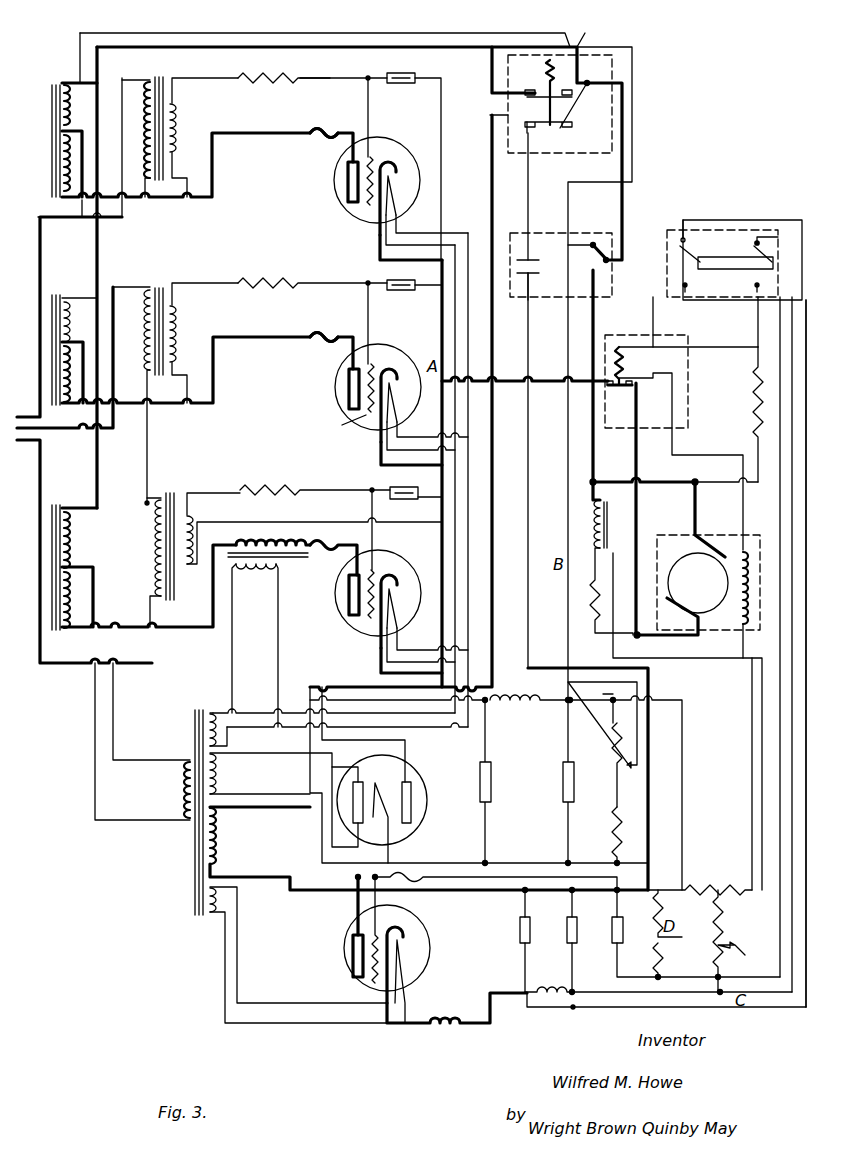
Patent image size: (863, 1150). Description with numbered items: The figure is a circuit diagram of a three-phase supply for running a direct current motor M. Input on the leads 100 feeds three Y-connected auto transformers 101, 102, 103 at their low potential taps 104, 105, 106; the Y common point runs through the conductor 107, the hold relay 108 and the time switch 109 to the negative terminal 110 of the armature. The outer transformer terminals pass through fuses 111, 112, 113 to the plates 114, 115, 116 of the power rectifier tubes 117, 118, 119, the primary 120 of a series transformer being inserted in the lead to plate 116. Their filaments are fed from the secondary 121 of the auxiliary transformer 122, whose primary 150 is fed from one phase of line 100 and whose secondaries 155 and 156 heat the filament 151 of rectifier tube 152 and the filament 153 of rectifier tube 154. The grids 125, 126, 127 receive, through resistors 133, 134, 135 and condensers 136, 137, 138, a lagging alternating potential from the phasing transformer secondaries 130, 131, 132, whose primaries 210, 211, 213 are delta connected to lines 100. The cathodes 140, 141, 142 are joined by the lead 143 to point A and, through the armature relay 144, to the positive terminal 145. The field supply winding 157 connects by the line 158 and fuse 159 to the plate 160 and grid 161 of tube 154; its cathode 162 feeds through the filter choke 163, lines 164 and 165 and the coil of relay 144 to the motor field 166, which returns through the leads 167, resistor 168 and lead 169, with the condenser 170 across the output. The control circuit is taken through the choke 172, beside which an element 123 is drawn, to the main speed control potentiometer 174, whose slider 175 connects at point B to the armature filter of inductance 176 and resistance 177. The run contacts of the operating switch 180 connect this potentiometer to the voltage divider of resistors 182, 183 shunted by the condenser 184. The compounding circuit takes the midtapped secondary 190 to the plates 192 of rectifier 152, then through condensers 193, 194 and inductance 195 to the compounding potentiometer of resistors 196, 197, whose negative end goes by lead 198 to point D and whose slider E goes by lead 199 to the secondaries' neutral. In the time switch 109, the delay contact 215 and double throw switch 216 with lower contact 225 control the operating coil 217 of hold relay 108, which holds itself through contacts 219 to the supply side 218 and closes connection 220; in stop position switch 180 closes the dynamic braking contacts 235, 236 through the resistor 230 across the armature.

The input power leads 100 is at (30, 410).
The auto transformer 101 is at (60, 108).
The auto transformer 102 is at (62, 290).
The auto transformer 103 is at (60, 508).
The low potential tap 104 is at (58, 150).
The low potential tap 105 is at (65, 336).
The low potential tap 106 is at (78, 558).
The conductor 107 is at (232, 60).
The hold relay 108 is at (612, 70).
The time switch 109 is at (556, 302).
The negative terminal of motor armature 110 is at (693, 515).
The fuse 111 is at (322, 128).
The fuse 112 is at (335, 322).
The fuse 113 is at (330, 538).
The plate 114 is at (348, 180).
The plate 115 is at (349, 388).
The plate 116 is at (349, 598).
The power rectifier tube 117 is at (397, 140).
The power rectifier tube 118 is at (400, 348).
The power rectifier tube 119 is at (408, 545).
The primary of series transformer 120 is at (242, 545).
The secondary of auxiliary transformer 121 is at (213, 710).
The auxiliary transformer 122 is at (193, 727).
The condenser 123 is at (565, 915).
The grid 125 is at (372, 155).
The grid 126 is at (373, 360).
The grid 127 is at (368, 620).
The phase transformer secondary winding 130 is at (180, 130).
The phase transformer secondary winding 131 is at (185, 340).
The phase transformer secondary winding 132 is at (185, 600).
The grid resistor 133 is at (301, 103).
The grid resistor 134 is at (265, 268).
The grid resistor 135 is at (275, 478).
The condenser 136 is at (415, 74).
The condenser 137 is at (388, 283).
The condenser 138 is at (392, 488).
The cathode 140 is at (395, 168).
The cathode 141 is at (333, 412).
The cathode 142 is at (400, 628).
The cathode lead 143 is at (418, 405).
The armature relay 144 is at (688, 380).
The positive terminal of motor armature 145 is at (700, 635).
The primary of auxiliary transformer 150 is at (185, 790).
The filament 151 is at (395, 770).
The rectifier tube 152 is at (412, 812).
The filament 153 is at (405, 975).
The rectifier tube 154 is at (415, 925).
The secondary 155 is at (215, 785).
The secondary 156 is at (205, 912).
The field supply winding 157 is at (215, 850).
The line 158 is at (305, 680).
The fuse 159 is at (410, 870).
The plate 160 is at (353, 945).
The grid 161 is at (372, 958).
The cathode 162 is at (400, 930).
The filter choke 163 is at (430, 1030).
The line 164 is at (500, 1010).
The line 165 is at (605, 1020).
The motor field 166 is at (742, 548).
The lead 167 is at (750, 820).
The current limiting resistor 168 is at (705, 870).
The lead 169 is at (656, 870).
The condenser 170 is at (518, 930).
The choke 172 is at (553, 985).
The main speed control potentiometer 174 is at (712, 945).
The slider 175 is at (772, 959).
The iron cored inductance 176 is at (596, 512).
The resistance 177 is at (592, 605).
The operating switch 180 is at (676, 218).
The fixed resistor 182 is at (656, 958).
The fixed resistor 183 is at (656, 910).
The condenser 184 is at (610, 930).
The secondary of series transformer 190 is at (252, 580).
The plates 192 is at (353, 805).
The condenser 193 is at (493, 790).
The condenser 194 is at (563, 808).
The inductance 195 is at (522, 705).
The fixed resistor 196 is at (612, 840).
The compounding potentiometer 197 is at (615, 740).
The lead 198 is at (685, 752).
The lead 199 is at (512, 690).
The phasing transformer primary 210 is at (147, 90).
The phasing transformer primary 211 is at (155, 285).
The phasing transformer primary 213 is at (160, 497).
The delay contact 215 is at (520, 290).
The single pole double throw switch 216 is at (612, 250).
The operating coil 217 is at (545, 72).
The main power supply side 218 is at (564, 29).
The hold relay contacts 219 is at (594, 72).
The hold relay connection 220 is at (520, 118).
The lower contact 225 is at (598, 277).
The resistor 230 is at (755, 412).
The dynamic braking contact 235 is at (653, 322).
The dynamic braking contact 236 is at (765, 652).
The motor armature M is at (708, 582).